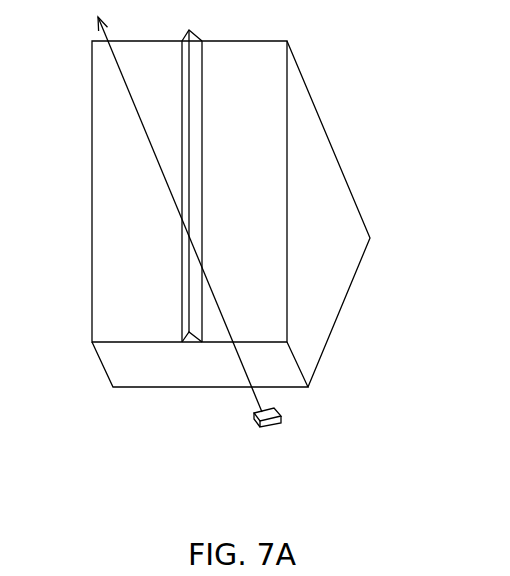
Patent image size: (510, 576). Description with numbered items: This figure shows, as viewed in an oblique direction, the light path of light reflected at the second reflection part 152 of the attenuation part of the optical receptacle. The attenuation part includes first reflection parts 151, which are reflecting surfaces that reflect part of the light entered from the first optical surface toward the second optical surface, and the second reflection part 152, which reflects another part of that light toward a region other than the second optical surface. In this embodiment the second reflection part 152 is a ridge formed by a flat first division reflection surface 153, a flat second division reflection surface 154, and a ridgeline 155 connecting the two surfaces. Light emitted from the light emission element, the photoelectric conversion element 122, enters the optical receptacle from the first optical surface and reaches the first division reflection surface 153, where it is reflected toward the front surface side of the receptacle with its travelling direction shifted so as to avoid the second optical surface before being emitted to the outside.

The first reflection part 151 is at (115, 313).
The second reflection part 152 is at (341, 186).
The first division reflection surface 153 is at (268, 178).
The second division reflection surface 154 is at (188, 120).
The ridgeline 155 is at (191, 153).
The photoelectric conversion element 122 is at (280, 418).